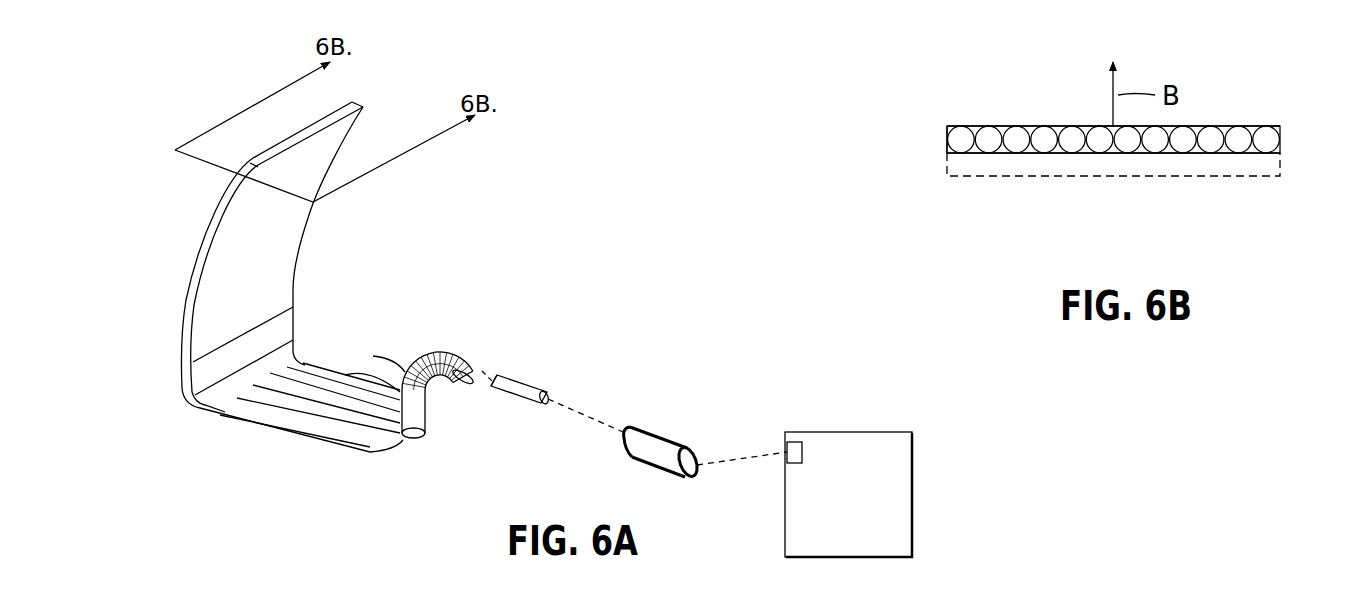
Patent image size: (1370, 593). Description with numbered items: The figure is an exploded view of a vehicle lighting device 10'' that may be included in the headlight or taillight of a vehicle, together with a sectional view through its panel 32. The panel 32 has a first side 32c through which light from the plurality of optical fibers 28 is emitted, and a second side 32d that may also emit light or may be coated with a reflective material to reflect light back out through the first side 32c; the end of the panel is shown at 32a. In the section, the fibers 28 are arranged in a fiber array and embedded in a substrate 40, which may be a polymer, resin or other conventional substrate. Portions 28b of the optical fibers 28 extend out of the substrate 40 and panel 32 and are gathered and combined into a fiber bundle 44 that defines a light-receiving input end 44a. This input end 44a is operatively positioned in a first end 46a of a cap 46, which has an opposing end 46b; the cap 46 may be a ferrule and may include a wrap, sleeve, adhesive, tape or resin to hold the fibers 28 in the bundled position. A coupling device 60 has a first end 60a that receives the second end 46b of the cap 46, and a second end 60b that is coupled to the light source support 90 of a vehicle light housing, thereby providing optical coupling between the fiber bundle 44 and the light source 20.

In FIG. 6A, the vehicle lighting device 10'' is at (662, 263).
In FIG. 6A, the light source 20 is at (787, 457).
In FIG. 6A, the optical fibers 28 is at (422, 352).
In FIG. 6B, the optical fibers 28 is at (1070, 155).
In FIG. 6A, the portions of the optical fibers 28b is at (362, 382).
In FIG. 6A, the panel 32 is at (188, 233).
In FIG. 6B, the panel 32 is at (1283, 171).
In FIG. 6B, the blade first end 32a is at (947, 138).
In FIG. 6A, the first side 32c is at (187, 312).
In FIG. 6B, the first side 32c is at (1085, 127).
In FIG. 6A, the second side 32d is at (273, 284).
In FIG. 6B, the second side 32d is at (1086, 157).
In FIG. 6B, the substrate 40 is at (1223, 126).
In FIG. 6A, the fiber bundle 44 is at (458, 357).
In FIG. 6A, the input end 44a is at (470, 380).
In FIG. 6A, the cap 46 is at (515, 398).
In FIG. 6A, the first end of cap 46a is at (502, 378).
In FIG. 6A, the second end of cap 46b is at (550, 402).
In FIG. 6A, the coupling device 60 is at (658, 432).
In FIG. 6A, the first end of coupling device 60a is at (627, 420).
In FIG. 6A, the second end of coupling device 60b is at (700, 453).
In FIG. 6A, the light source support 90 is at (850, 432).